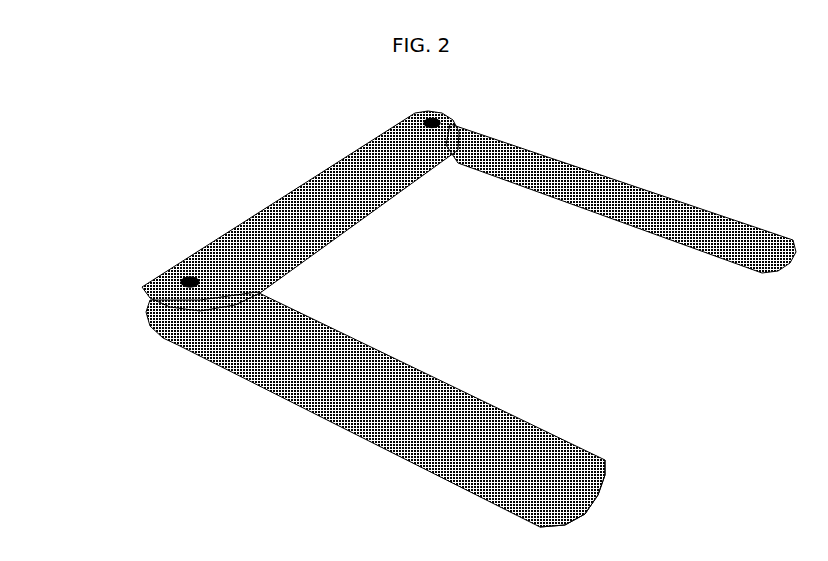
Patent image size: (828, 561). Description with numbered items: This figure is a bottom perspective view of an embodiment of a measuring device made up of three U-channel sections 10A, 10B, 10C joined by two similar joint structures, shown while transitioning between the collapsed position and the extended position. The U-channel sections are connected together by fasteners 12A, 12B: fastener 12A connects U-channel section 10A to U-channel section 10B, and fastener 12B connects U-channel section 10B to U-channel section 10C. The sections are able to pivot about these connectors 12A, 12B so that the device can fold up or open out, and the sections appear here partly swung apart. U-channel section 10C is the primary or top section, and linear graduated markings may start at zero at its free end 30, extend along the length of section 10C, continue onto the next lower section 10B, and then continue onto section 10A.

The U-channel section 10A is at (653, 207).
The U-channel section 10B is at (327, 210).
The primary U-channel section 10C is at (257, 388).
The fastener 12A is at (440, 120).
The fastener 12B is at (165, 276).
The free end 30 is at (597, 457).